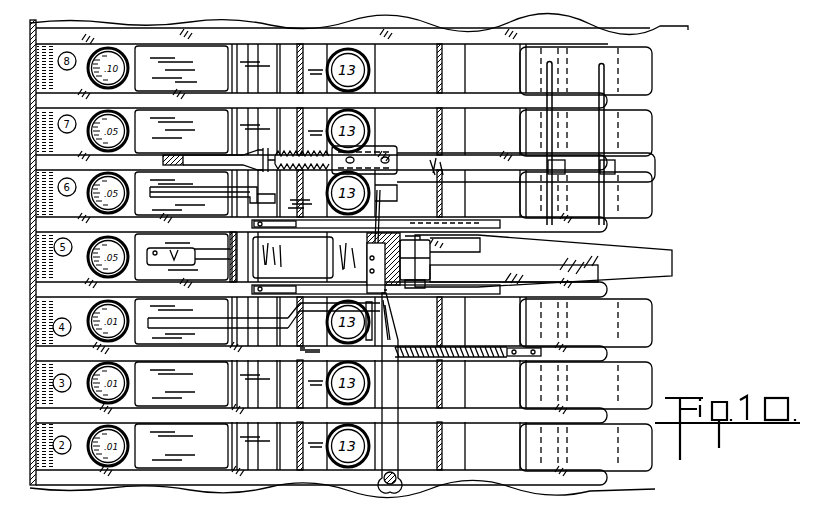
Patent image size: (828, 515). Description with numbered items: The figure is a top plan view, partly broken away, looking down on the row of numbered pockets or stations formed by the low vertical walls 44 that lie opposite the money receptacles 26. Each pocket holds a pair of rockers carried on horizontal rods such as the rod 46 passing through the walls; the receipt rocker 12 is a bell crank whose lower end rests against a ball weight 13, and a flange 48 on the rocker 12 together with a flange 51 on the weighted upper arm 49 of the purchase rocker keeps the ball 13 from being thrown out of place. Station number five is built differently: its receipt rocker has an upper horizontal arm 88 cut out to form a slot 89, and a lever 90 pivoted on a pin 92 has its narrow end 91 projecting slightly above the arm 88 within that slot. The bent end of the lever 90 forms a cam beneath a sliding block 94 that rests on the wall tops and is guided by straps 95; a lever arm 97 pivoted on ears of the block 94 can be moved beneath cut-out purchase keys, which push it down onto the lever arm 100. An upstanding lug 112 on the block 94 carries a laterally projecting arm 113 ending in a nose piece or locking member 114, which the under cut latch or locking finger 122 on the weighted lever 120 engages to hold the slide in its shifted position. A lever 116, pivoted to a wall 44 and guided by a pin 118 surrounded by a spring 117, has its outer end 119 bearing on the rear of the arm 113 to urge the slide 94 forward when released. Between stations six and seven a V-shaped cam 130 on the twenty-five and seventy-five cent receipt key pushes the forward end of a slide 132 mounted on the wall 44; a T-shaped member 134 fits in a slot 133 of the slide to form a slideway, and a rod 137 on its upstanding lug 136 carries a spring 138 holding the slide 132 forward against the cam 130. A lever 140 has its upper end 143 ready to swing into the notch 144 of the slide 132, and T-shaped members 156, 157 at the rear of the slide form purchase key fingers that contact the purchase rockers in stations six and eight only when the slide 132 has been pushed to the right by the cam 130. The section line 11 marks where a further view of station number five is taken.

The section line 11 is at (54, 282).
The receipt rocker 12 is at (57, 330).
The ball weight 13 is at (57, 166).
The money receptacle 26 is at (90, 462).
The low vertical wall 44 is at (436, 106).
The horizontal rod 46 is at (168, 84).
The flange 48 is at (297, 74).
The upper end of purchase rocker 49 is at (650, 73).
The flange 51 is at (434, 71).
The upper horizontal arm 88 is at (182, 263).
The slot 89 is at (155, 248).
The lever 90 is at (321, 259).
The narrow end of lever 91 is at (210, 256).
The pin 92 is at (275, 280).
The sliding block 94 is at (383, 241).
The strap 95 is at (470, 232).
The lever arm 97 is at (468, 265).
The lever arm 100 is at (636, 247).
The upstanding lug 112 is at (383, 215).
The laterally projecting arm 113 is at (388, 311).
The nose piece or locking member 114 is at (338, 283).
The lever 116 is at (392, 397).
The spring 117 is at (466, 358).
The pin 118 is at (504, 347).
The outer end of lever 119 is at (392, 296).
The lever of the first class 120 is at (168, 340).
The locking finger 122 is at (374, 328).
The cam 130 is at (170, 155).
The slide 132 is at (505, 175).
The slot 133 is at (300, 154).
The T-shaped member 134 is at (364, 160).
The upstanding lug 136 is at (372, 147).
The laterally projecting rod 137 is at (265, 148).
The spring 138 is at (304, 208).
The lever 140 is at (175, 197).
The upper end of lever 143 is at (400, 171).
The slot 144 is at (382, 197).
The T-shaped member 156 is at (527, 81).
The T-shaped member 157 is at (605, 70).